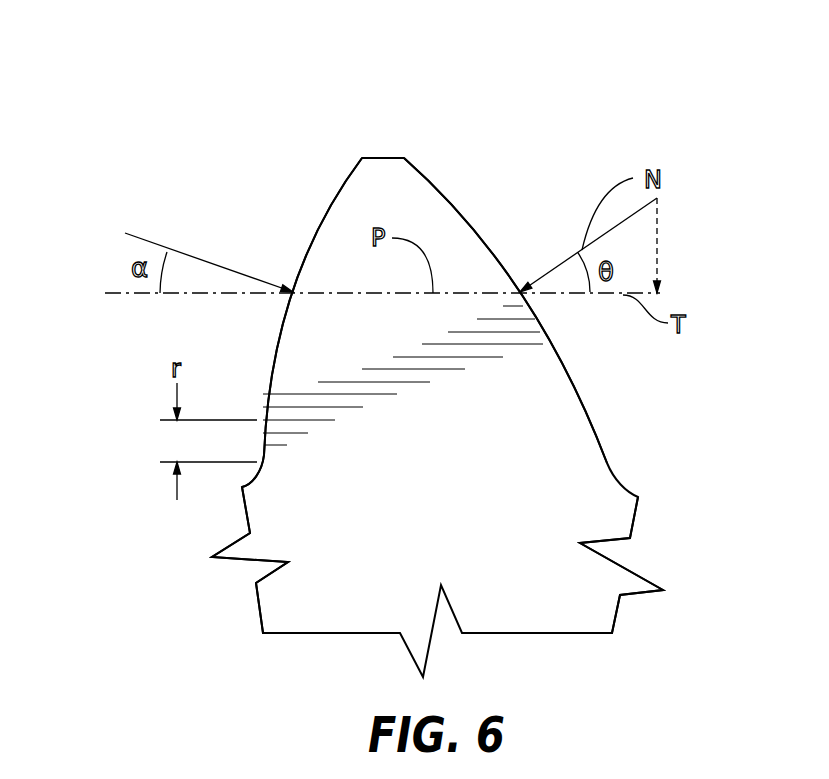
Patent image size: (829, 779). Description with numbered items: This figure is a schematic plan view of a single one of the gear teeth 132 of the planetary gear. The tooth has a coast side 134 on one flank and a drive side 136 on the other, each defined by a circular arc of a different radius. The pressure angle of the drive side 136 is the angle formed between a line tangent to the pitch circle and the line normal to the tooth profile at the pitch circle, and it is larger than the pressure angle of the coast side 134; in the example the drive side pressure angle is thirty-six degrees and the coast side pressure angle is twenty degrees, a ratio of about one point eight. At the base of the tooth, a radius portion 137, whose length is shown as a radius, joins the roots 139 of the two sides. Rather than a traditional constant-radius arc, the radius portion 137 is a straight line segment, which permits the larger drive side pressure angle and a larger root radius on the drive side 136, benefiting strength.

The gear tooth 132 is at (413, 90).
The coast side 134 is at (313, 240).
The drive side 136 is at (495, 245).
The radius portion 137 is at (263, 440).
The roots 139 is at (123, 478).